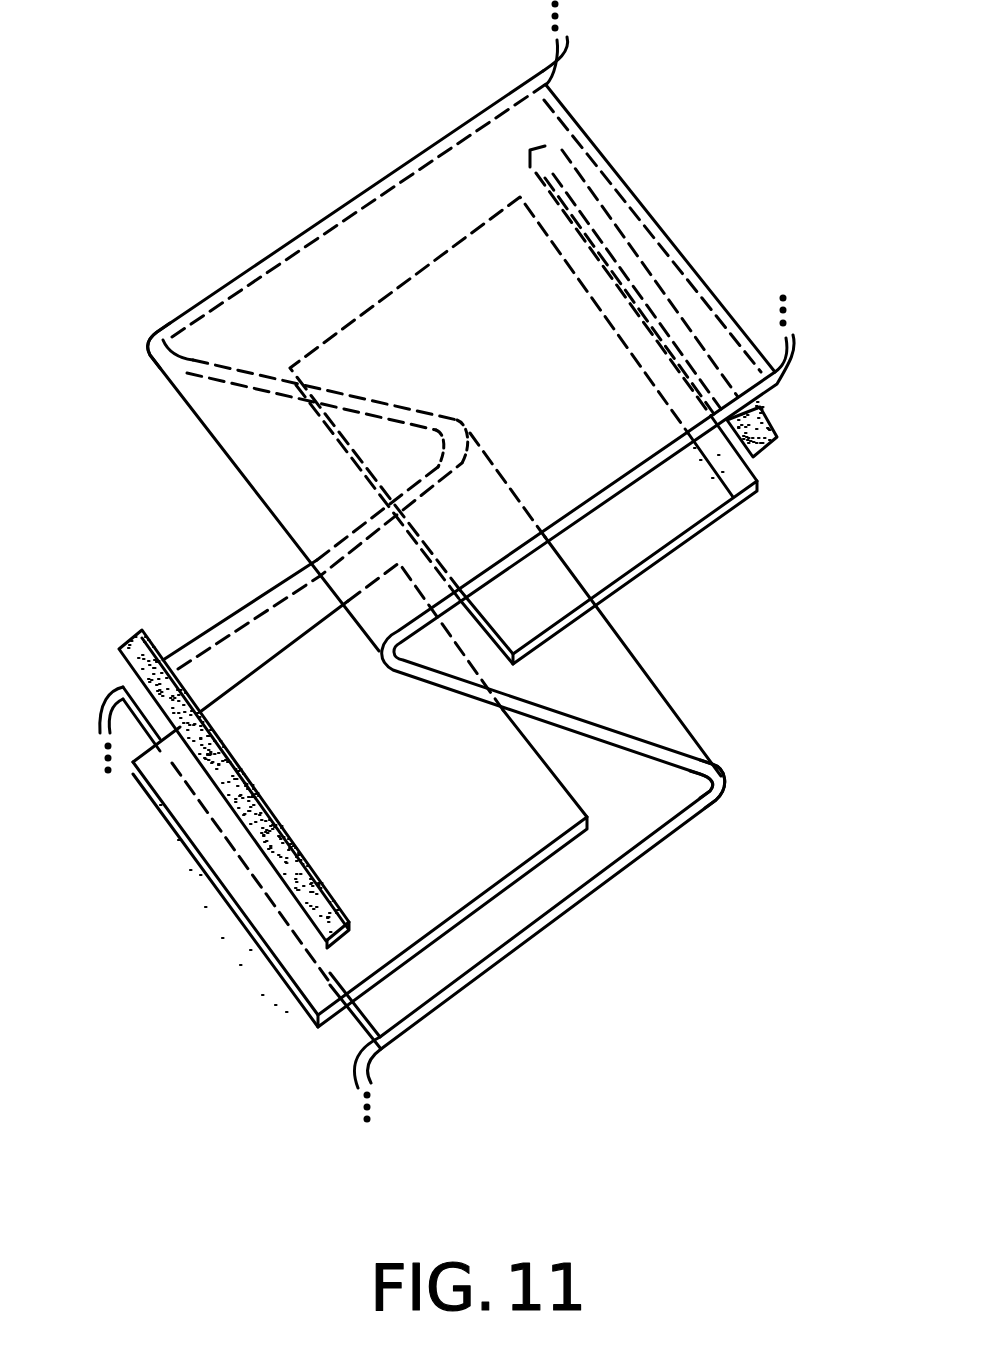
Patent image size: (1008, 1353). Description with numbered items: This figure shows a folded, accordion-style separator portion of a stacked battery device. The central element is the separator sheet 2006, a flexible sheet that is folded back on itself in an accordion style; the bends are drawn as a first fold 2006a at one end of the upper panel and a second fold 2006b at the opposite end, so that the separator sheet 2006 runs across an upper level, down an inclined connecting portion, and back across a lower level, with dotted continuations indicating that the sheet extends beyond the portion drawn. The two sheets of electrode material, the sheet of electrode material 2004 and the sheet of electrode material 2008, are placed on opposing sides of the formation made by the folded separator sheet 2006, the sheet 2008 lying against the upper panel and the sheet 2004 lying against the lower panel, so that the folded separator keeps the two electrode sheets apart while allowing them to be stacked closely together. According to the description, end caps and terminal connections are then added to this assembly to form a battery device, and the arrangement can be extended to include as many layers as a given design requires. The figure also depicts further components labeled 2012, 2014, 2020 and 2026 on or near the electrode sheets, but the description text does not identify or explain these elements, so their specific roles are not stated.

The sheet of electrode material 2004 is at (417, 952).
The separator sheet 2006 is at (222, 618).
The fold 2006a is at (148, 342).
The fold 2006b is at (722, 780).
The sheet of electrode material 2008 is at (645, 562).
The connector strip on second circuit board 2012 is at (300, 1000).
The component on first circuit board 2014 is at (757, 478).
The elongated component on second circuit board 2020 is at (122, 645).
The contact pad on component 2014 2026 is at (777, 413).